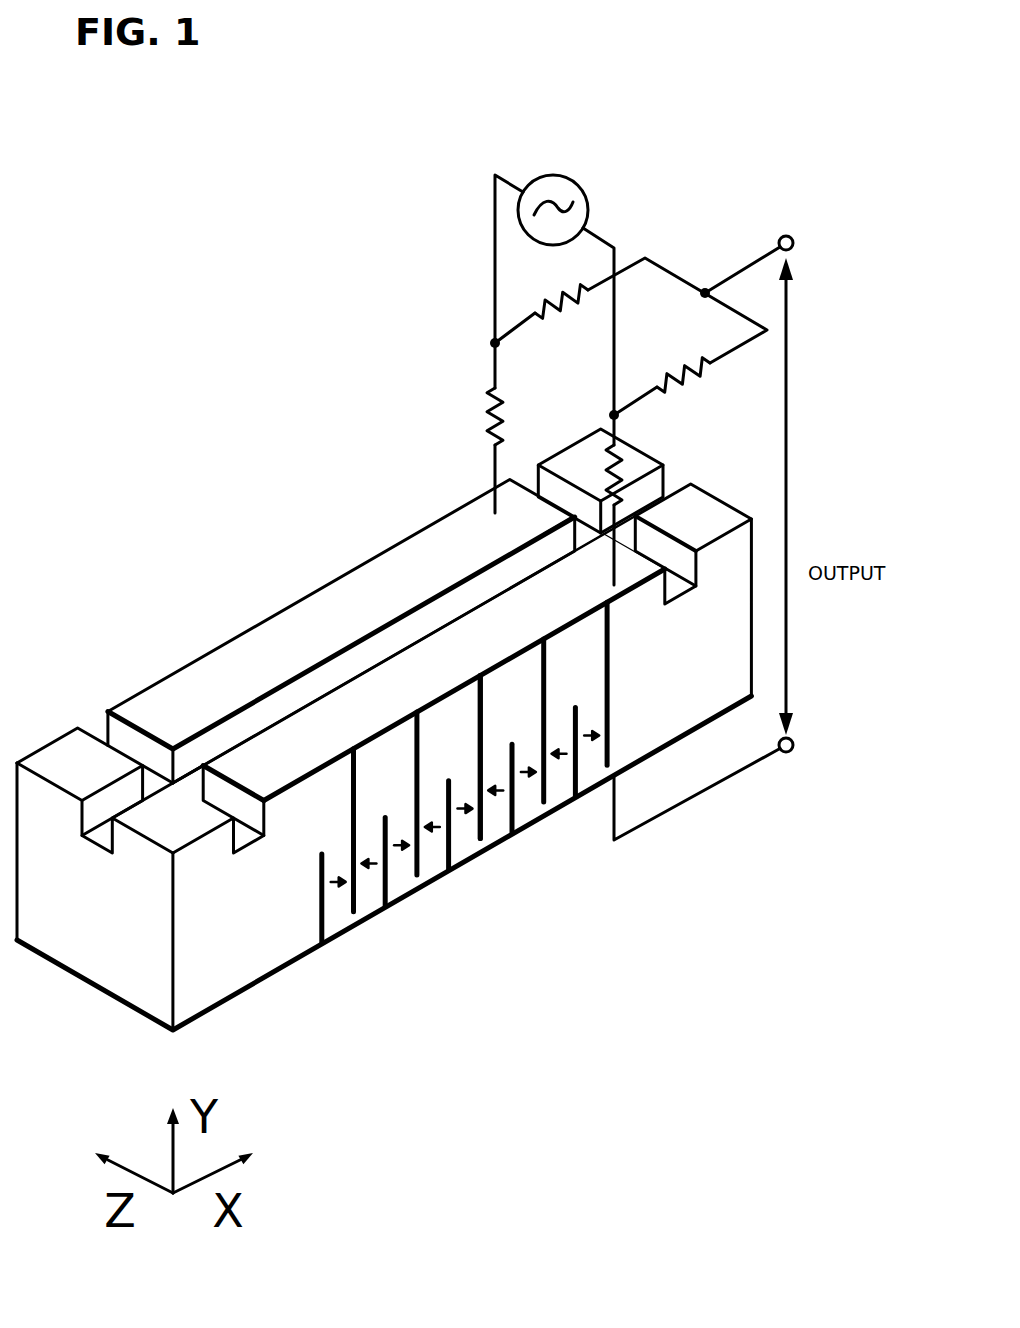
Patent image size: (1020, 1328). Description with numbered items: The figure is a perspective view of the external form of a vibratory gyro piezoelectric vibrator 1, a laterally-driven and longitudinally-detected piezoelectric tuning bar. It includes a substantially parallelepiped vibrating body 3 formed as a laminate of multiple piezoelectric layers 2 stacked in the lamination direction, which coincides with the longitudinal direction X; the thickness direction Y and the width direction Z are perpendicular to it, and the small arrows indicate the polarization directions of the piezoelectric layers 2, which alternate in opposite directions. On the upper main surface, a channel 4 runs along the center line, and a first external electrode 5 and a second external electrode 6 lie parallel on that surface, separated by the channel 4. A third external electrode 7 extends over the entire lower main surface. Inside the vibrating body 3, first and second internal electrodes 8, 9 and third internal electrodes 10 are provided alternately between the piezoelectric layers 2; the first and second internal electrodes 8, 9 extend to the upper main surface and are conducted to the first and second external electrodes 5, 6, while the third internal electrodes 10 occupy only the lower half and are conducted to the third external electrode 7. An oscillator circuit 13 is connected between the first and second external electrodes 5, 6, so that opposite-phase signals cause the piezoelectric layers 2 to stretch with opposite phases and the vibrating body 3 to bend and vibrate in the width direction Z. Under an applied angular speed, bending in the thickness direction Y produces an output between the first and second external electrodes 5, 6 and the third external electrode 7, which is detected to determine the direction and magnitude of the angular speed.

The vibratory gyro piezoelectric vibrator 1 is at (122, 679).
The piezoelectric layers 2 is at (403, 880).
The vibrating body 3 is at (265, 933).
The channel 4 is at (387, 652).
The first external electrode 5 is at (277, 662).
The second external electrode 6 is at (487, 635).
The third external electrode 7 is at (370, 923).
The first internal electrode 8 is at (487, 813).
The second internal electrode 9 is at (487, 813).
The third internal electrode 10 is at (457, 835).
The oscillator circuit 13 is at (561, 173).